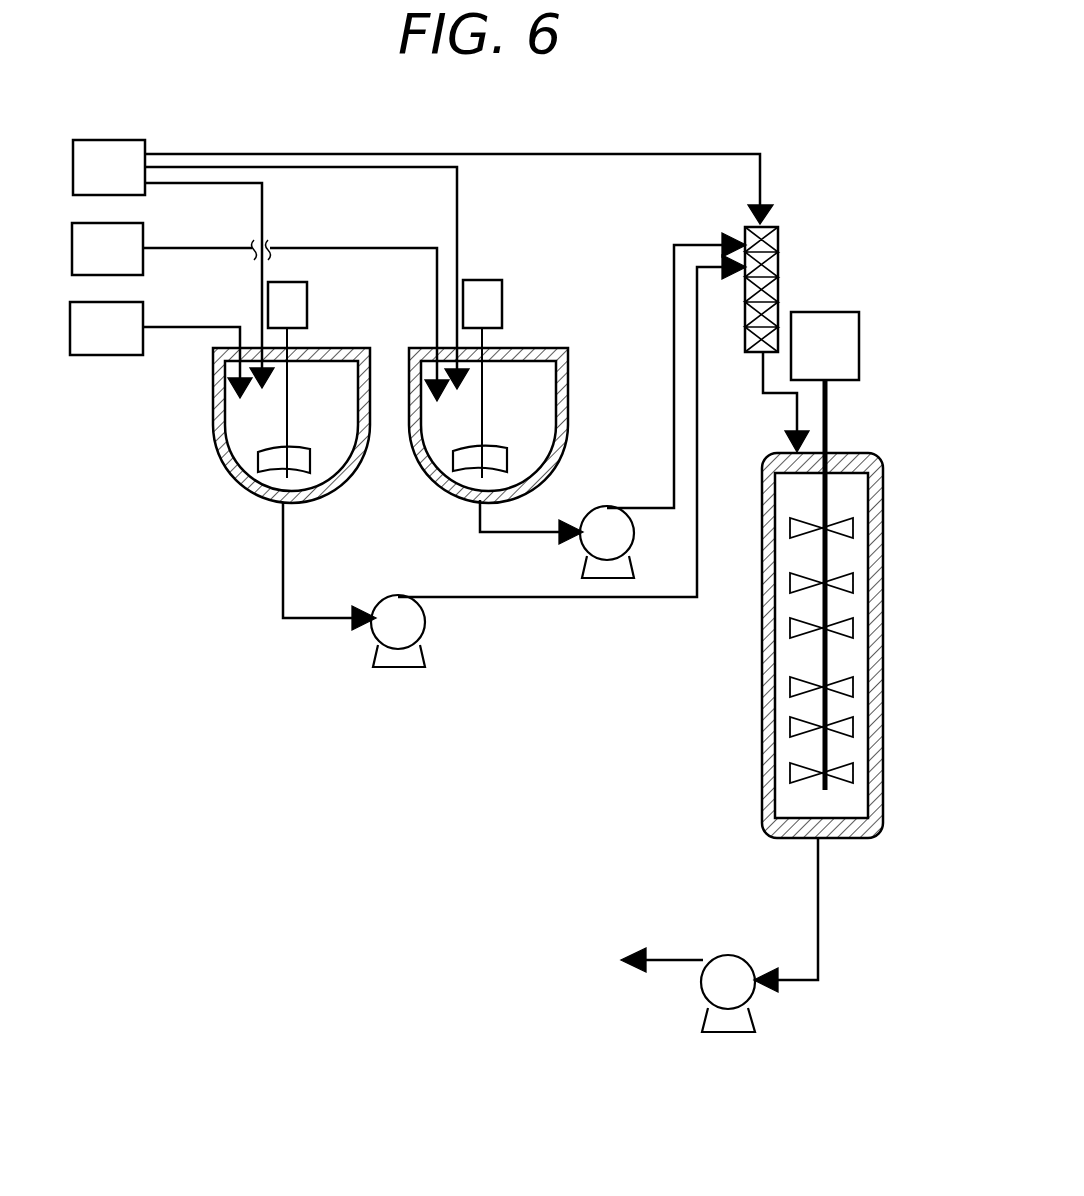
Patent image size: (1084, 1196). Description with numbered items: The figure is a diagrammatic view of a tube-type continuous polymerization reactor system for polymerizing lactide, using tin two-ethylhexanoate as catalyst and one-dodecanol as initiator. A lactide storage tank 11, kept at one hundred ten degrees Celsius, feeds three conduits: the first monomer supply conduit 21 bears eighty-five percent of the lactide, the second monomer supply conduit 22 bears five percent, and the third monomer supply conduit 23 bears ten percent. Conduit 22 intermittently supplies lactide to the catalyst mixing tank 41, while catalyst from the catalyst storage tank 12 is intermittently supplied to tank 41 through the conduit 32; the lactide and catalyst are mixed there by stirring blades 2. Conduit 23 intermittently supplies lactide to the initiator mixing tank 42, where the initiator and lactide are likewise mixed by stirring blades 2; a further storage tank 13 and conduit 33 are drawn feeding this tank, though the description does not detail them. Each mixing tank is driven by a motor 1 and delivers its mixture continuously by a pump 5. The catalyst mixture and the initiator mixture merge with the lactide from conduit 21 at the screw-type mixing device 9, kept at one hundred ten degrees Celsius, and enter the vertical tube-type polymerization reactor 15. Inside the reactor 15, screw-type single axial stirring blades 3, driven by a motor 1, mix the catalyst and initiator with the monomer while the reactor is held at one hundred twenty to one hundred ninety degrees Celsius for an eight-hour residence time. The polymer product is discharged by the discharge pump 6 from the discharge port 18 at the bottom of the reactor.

The motor 1 is at (563, 535).
The stirring blades 2 is at (305, 455).
The screw-type single axial stirring blades 3 is at (846, 583).
The pump 5 is at (383, 630).
The discharge pump 6 is at (705, 996).
The mixing device 9 is at (779, 257).
The lactide storage tank 11 is at (109, 167).
The catalyst storage tank 12 is at (106, 328).
The raw material supply source 13 is at (107, 249).
The polymerization reactor 15 is at (855, 452).
The discharge port 18 is at (668, 960).
The first monomer supply conduit 21 is at (761, 173).
The second monomer supply conduit 22 is at (263, 207).
The third monomer supply conduit 23 is at (458, 206).
The conduit 32 is at (149, 327).
The supply line 33 is at (349, 248).
The catalyst mixing tank 41 is at (247, 462).
The initiator mixing tank 42 is at (446, 462).